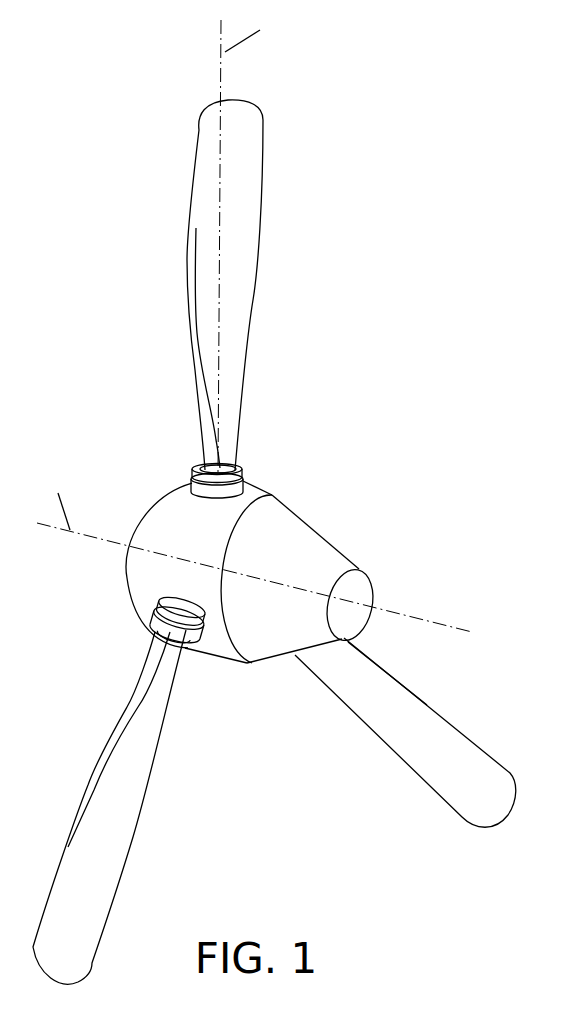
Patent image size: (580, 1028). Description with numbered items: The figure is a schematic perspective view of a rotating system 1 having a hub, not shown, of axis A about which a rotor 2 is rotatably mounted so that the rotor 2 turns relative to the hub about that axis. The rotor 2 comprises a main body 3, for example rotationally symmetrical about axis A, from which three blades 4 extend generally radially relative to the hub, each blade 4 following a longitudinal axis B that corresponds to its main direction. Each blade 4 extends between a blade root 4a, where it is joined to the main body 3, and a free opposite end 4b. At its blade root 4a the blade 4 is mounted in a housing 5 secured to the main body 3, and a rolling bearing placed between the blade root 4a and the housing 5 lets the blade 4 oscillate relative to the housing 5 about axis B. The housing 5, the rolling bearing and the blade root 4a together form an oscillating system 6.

The rotating system 1 is at (356, 509).
The rotor 2 is at (186, 544).
The main body 3 is at (320, 555).
The blade 4 is at (235, 312).
The blade root 4a is at (210, 458).
The free opposite end 4b is at (238, 100).
The housing 5 is at (238, 487).
The oscillating system 6 is at (148, 626).